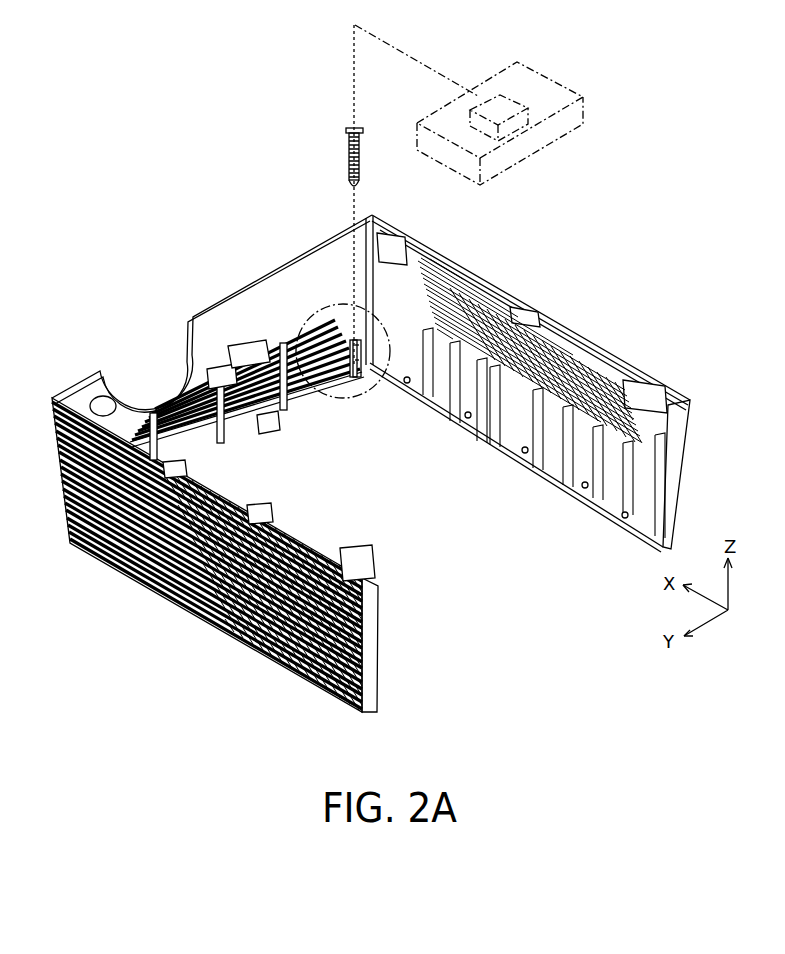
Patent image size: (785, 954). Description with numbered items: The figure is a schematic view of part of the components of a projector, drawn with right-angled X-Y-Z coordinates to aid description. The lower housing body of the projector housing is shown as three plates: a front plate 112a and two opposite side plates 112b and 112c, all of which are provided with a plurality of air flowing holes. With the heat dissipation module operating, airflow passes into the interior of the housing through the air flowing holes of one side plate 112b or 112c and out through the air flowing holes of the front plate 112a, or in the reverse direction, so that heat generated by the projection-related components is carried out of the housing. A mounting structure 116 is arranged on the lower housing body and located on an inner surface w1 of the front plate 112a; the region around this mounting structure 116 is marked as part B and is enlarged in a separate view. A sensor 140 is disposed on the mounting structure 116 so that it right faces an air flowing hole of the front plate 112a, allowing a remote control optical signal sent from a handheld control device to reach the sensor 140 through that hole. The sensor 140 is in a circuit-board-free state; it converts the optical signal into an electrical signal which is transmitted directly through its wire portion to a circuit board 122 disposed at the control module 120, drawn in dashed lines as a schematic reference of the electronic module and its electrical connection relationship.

The front plate 112a is at (240, 290).
The side plate 112b is at (220, 632).
The side plate 112c is at (625, 357).
The mounting structure 116 is at (363, 380).
The control module 120 is at (585, 90).
The circuit board 122 is at (515, 66).
The sensor 140 is at (336, 152).
The inner surface w1 is at (306, 287).
The part B is at (349, 400).